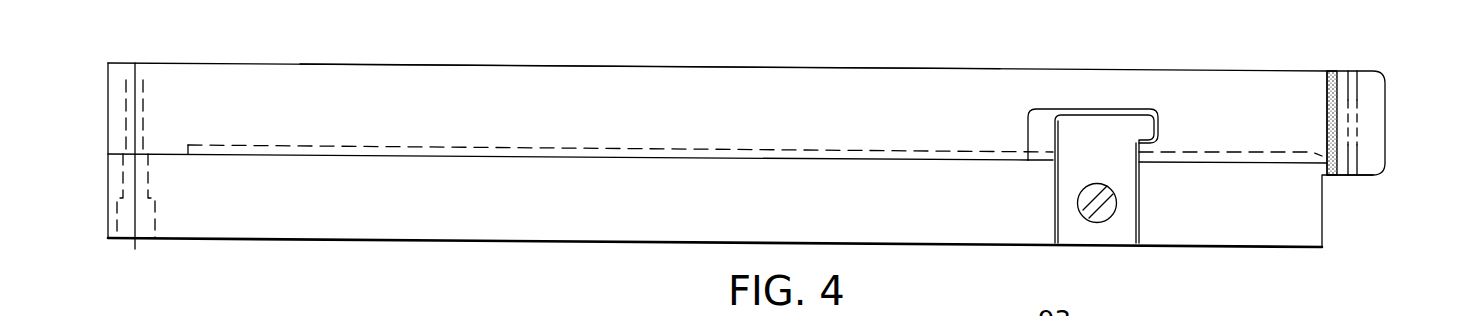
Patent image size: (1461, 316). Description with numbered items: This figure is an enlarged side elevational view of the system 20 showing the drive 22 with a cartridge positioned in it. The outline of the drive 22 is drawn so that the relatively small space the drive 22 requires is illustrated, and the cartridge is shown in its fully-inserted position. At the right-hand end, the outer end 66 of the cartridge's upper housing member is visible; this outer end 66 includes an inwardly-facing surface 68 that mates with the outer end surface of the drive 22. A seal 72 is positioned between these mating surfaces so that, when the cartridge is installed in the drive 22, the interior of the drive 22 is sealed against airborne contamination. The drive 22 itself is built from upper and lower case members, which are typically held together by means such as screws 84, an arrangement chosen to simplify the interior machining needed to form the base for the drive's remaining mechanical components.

The system 20 is at (1248, 58).
The drive 22 is at (917, 67).
The outer end 66 is at (1387, 128).
The inwardly-facing surface 68 is at (1330, 177).
The seal 72 is at (1332, 72).
The screws 84 is at (155, 206).